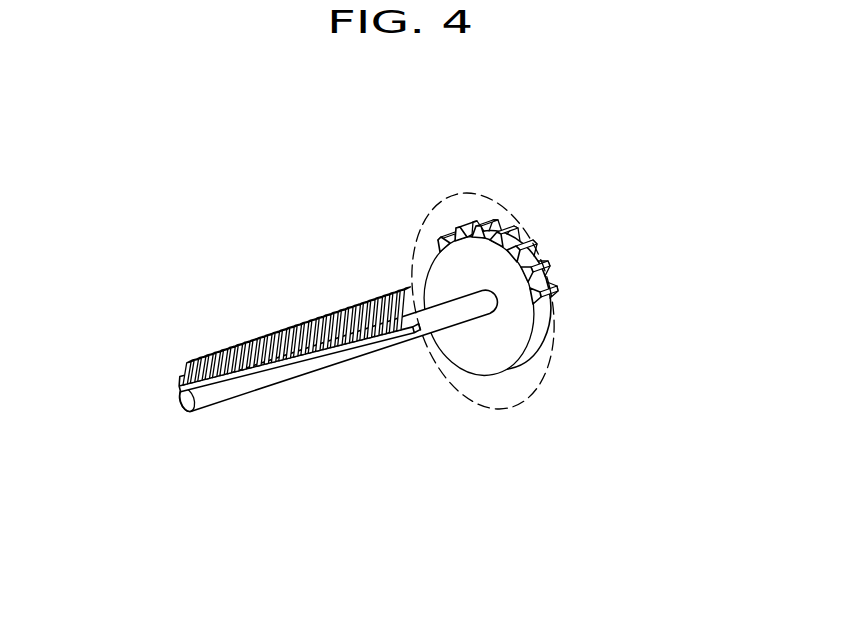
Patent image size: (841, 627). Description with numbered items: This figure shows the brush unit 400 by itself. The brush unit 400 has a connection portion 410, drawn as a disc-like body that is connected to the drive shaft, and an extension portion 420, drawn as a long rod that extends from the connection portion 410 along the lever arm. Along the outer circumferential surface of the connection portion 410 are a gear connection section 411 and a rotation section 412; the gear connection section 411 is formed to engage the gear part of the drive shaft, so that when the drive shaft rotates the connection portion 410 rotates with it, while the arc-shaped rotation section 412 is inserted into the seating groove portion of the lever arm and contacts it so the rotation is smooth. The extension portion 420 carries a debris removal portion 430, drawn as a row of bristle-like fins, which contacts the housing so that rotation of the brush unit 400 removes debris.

The brush unit 400 is at (382, 314).
The connection portion 410 is at (507, 296).
The gear connection section 411 is at (495, 208).
The rotation section 412 is at (465, 397).
The extension portion 420 is at (180, 401).
The debris removal portion 430 is at (277, 330).